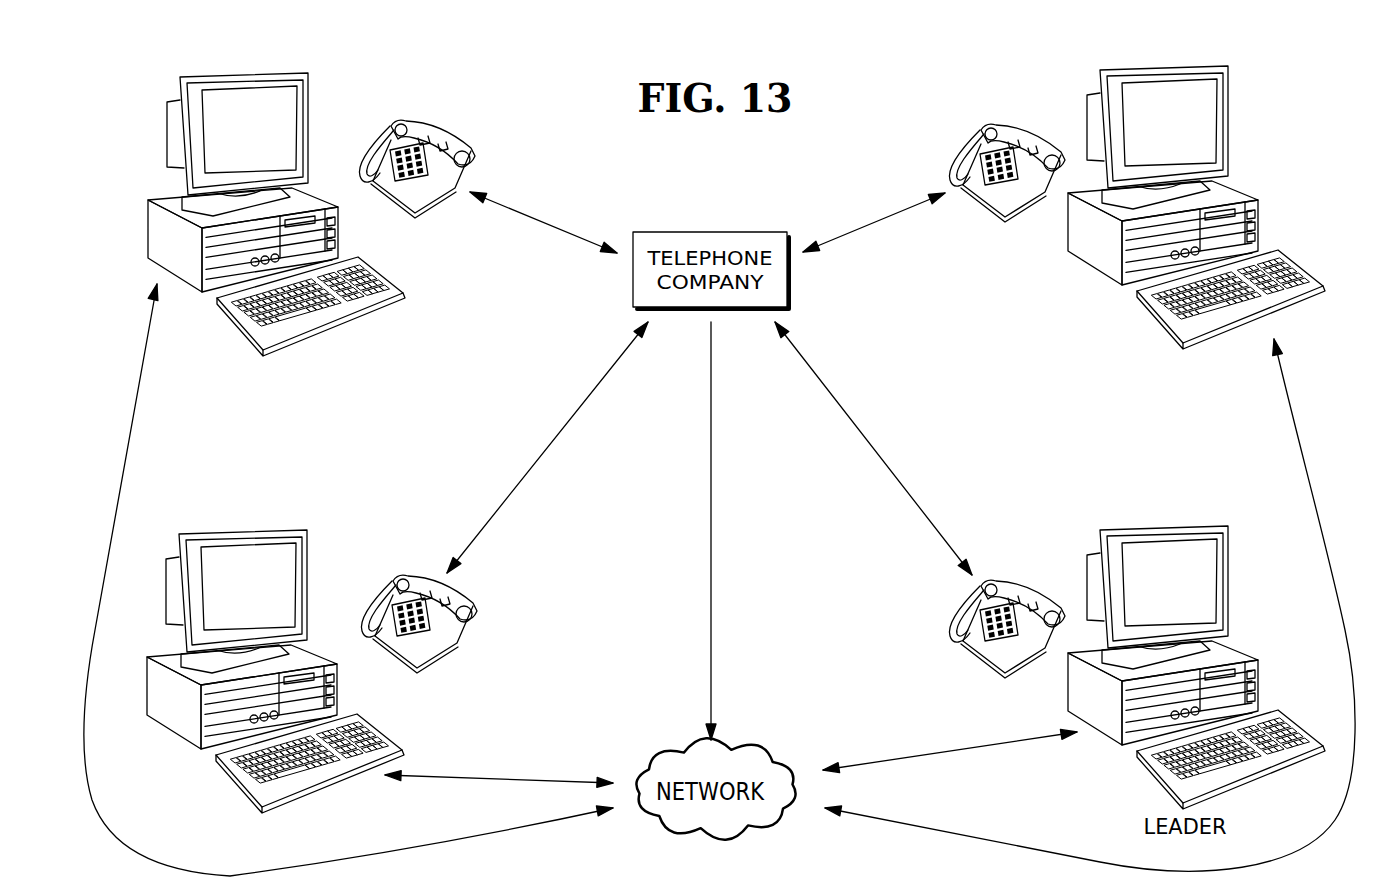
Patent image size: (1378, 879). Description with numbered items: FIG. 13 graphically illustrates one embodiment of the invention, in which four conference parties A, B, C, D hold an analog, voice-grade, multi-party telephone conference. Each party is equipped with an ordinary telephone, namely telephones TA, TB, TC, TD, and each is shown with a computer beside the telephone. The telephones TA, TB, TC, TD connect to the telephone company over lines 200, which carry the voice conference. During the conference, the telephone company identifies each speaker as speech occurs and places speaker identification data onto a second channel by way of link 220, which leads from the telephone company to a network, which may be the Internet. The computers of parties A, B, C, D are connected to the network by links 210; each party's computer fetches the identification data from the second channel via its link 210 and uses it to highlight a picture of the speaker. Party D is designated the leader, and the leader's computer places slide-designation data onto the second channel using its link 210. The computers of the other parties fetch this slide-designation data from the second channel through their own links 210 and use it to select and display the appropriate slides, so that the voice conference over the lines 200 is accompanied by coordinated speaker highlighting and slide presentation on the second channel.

The party A is at (276, 200).
The party B is at (275, 656).
The party C is at (1196, 194).
The party D is at (1196, 652).
The telephone TA is at (410, 167).
The telephone TB is at (422, 626).
The telephone TC is at (1000, 171).
The telephone TD is at (992, 629).
The lines 200 is at (550, 225).
The links 210 is at (542, 781).
The link 220 is at (711, 536).